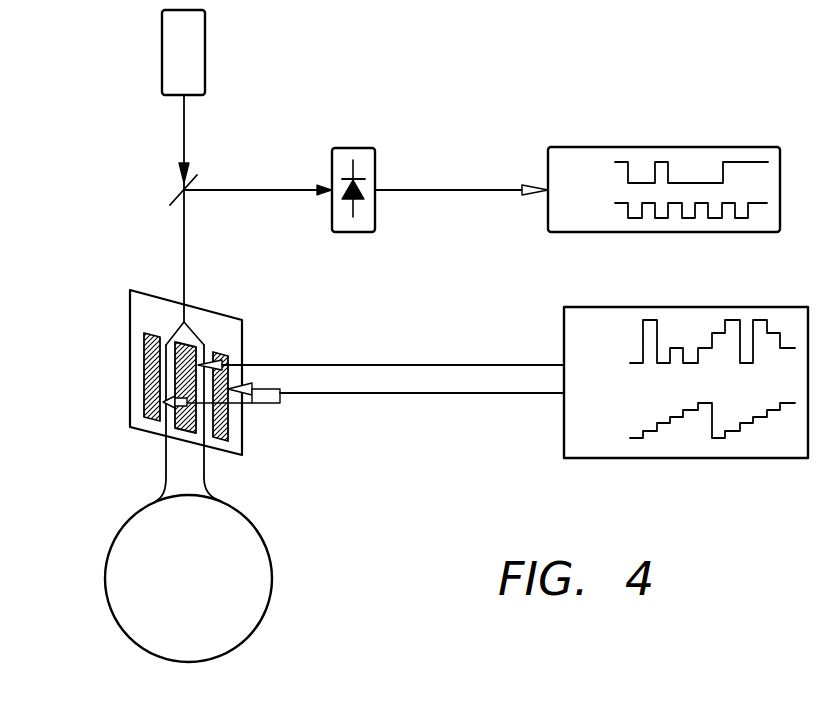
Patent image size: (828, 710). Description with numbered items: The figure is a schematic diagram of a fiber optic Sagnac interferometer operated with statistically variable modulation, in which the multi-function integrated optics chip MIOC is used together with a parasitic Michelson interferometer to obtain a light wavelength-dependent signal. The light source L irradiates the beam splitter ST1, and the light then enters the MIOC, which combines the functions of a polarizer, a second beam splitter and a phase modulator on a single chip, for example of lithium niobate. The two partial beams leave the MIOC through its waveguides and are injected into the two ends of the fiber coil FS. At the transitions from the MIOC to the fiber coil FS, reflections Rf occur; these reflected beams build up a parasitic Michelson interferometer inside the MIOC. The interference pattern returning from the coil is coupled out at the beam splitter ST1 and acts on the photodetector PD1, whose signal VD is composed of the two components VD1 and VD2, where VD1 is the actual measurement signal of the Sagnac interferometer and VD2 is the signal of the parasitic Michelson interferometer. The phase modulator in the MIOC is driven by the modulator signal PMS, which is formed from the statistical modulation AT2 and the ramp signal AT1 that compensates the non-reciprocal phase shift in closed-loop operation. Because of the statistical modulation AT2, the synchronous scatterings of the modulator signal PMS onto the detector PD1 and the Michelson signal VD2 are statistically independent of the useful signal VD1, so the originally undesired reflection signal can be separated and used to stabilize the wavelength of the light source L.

The light source L is at (162, 52).
The beam splitter ST1 is at (181, 187).
The photodetector PD1 is at (352, 148).
The photodetector signal VD is at (482, 189).
The measurement signal of the Sagnac interferometer VD1 is at (665, 175).
The signal of the parasitic Michelson interferometer VD2 is at (664, 213).
The multi-function integrated optics chip MIOC is at (130, 340).
The reflections Rf is at (150, 435).
The fiber coil FS is at (242, 588).
The modulator signal PMS is at (497, 400).
The ramp signal AT1 is at (693, 420).
The statistical modulation AT2 is at (690, 341).